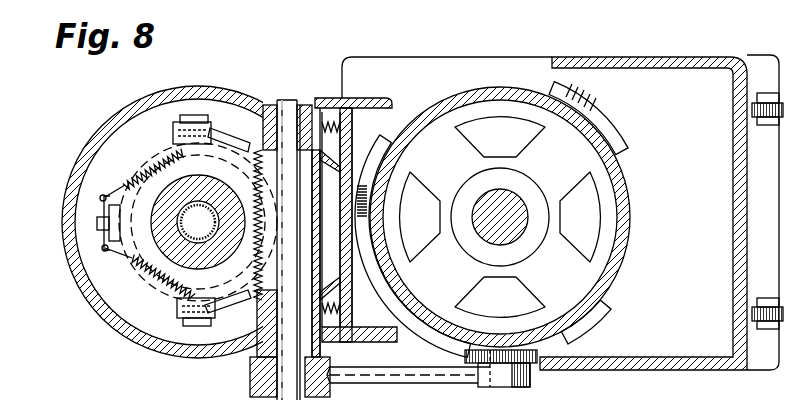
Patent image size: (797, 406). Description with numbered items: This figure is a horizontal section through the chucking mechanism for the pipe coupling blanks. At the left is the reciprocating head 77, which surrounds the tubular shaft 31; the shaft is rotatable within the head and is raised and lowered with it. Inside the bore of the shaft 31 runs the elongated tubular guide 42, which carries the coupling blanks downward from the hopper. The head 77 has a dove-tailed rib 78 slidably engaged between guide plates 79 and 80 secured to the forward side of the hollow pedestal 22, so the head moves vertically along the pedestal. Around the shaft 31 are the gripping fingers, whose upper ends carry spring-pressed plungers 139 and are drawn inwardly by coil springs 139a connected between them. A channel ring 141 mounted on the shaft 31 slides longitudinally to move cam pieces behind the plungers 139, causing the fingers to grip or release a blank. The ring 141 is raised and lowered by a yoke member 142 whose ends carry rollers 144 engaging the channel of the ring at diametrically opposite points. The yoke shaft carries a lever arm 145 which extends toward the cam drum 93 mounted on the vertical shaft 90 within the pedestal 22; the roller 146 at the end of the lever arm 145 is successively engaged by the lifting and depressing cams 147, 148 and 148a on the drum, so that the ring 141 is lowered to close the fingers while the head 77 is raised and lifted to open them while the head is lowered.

The hollow pedestal 22 is at (562, 212).
The reciprocating head 77 is at (84, 165).
The elongated tubular guide 42 is at (198, 222).
The tubular shaft 31 is at (205, 268).
The spring-pressed plungers 139 is at (97, 222).
The coil springs 139a is at (126, 182).
The channel ring 141 is at (120, 246).
The yoke member 142 is at (178, 313).
The rollers 144 is at (236, 134).
The guide plate 80 is at (332, 97).
The dove-tailed rib 78 is at (350, 150).
The guide plate 79 is at (345, 348).
The cam drum 93 is at (620, 246).
The vertical shaft 90 is at (499, 230).
The depressing cam 148a is at (366, 245).
The lifting cam 148 is at (598, 117).
The lifting cam 147 is at (600, 325).
The roller 146 is at (465, 356).
The lever arm 145 is at (428, 376).